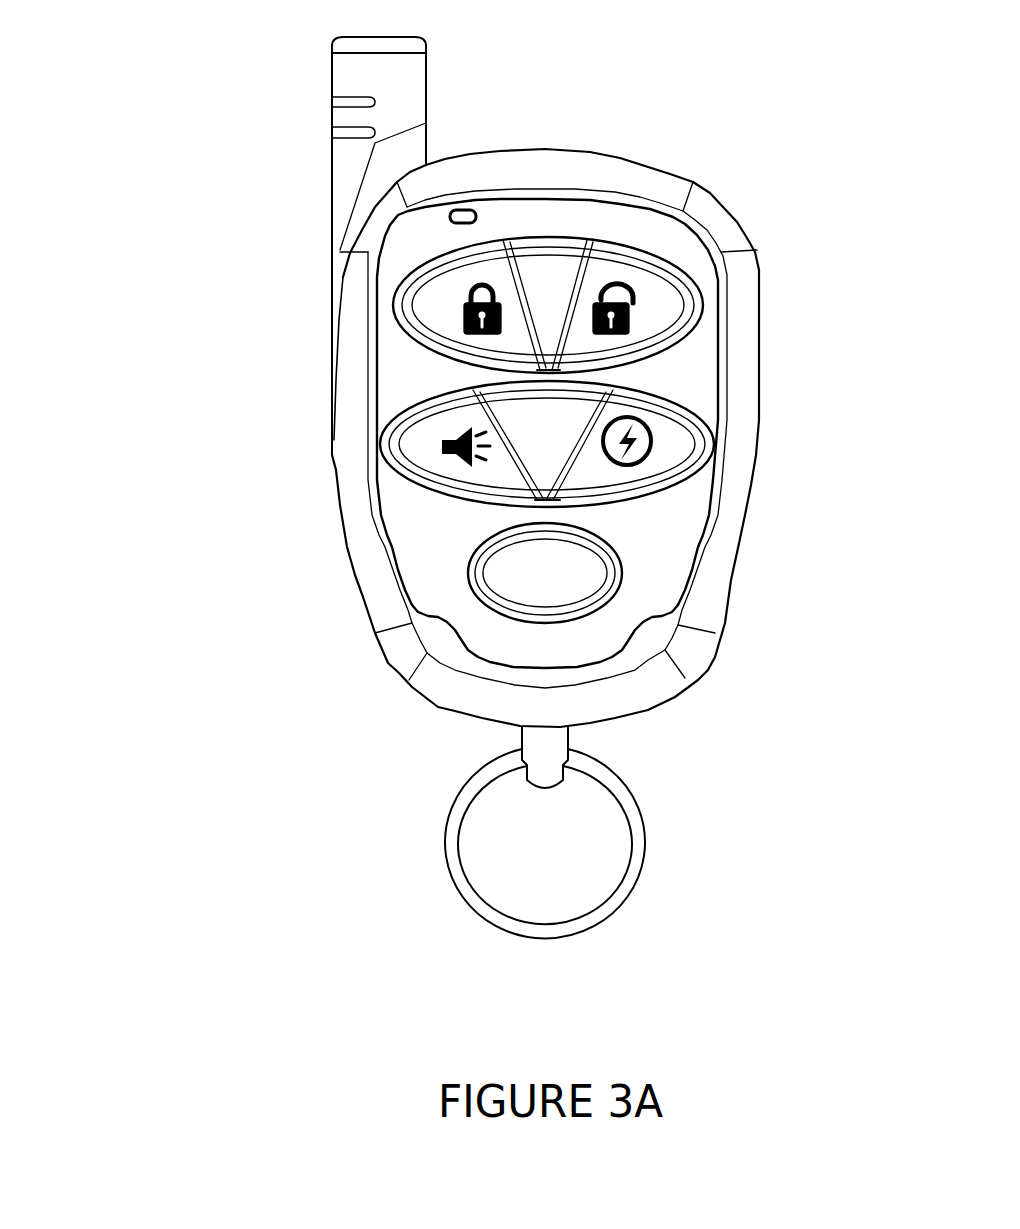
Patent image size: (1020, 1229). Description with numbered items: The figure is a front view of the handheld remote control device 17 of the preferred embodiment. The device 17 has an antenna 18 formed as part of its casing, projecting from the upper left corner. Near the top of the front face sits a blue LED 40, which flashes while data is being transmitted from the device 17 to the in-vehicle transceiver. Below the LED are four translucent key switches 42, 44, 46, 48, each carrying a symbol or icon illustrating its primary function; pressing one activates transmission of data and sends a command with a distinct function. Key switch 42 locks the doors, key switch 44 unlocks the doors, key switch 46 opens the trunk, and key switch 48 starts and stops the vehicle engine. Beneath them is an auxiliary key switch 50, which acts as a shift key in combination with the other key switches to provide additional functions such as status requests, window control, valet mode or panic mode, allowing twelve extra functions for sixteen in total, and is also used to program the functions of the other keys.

The remote control device 17 is at (276, 423).
The antenna 18 is at (350, 85).
The blue LED 40 is at (490, 203).
The key switch 42 is at (447, 313).
The key switch 44 is at (650, 315).
The key switch 46 is at (432, 457).
The key switch 48 is at (665, 458).
The auxiliary key switch 50 is at (535, 593).